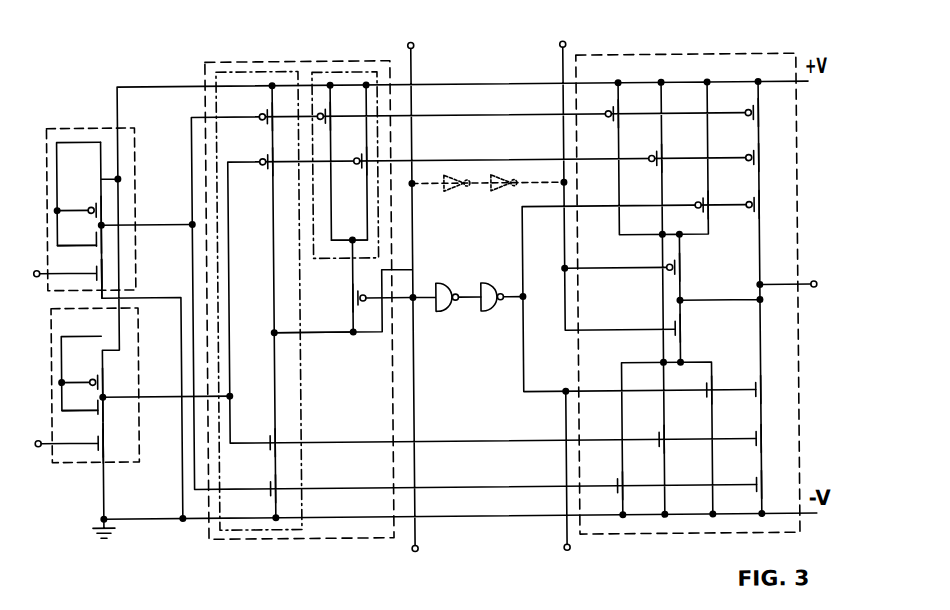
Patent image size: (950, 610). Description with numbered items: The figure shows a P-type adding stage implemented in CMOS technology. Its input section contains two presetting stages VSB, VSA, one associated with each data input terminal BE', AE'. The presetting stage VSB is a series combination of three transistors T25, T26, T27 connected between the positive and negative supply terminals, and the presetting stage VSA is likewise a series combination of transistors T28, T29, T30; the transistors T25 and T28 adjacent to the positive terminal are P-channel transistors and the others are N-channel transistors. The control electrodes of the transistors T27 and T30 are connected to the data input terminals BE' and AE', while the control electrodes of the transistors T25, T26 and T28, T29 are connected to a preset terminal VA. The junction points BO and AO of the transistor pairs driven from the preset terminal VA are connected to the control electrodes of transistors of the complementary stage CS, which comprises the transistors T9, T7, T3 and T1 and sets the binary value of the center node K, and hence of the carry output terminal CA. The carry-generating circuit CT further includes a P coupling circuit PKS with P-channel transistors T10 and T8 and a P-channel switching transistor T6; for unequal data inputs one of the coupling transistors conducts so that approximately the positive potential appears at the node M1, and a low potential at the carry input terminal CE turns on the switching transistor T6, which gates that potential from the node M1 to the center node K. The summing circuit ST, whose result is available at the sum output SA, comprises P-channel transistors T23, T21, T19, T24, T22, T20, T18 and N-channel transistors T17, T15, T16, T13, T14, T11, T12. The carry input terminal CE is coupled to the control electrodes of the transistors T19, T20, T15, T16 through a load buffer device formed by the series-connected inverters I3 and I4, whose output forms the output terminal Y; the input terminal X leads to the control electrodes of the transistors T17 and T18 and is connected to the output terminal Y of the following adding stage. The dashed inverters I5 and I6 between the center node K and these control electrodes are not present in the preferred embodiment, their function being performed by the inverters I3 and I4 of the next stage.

The transistor T1 is at (268, 496).
The transistor T3 is at (268, 445).
The switching transistor T6 is at (370, 296).
The transistor T7 is at (266, 170).
The transistor T8 is at (351, 167).
The transistor T9 is at (257, 111).
The transistor T10 is at (339, 117).
The transistor T11 is at (612, 493).
The transistor T12 is at (751, 491).
The transistor T13 is at (658, 449).
The transistor T14 is at (755, 448).
The transistor T15 is at (702, 398).
The transistor T16 is at (751, 402).
The transistor T17 is at (687, 334).
The transistor T18 is at (684, 262).
The transistor T19 is at (719, 206).
The transistor T20 is at (766, 200).
The transistor T21 is at (653, 163).
The transistor T22 is at (764, 152).
The transistor T23 is at (607, 118).
The transistor T24 is at (763, 106).
The transistor T25 is at (85, 201).
The transistor T26 is at (85, 237).
The transistor T27 is at (76, 268).
The transistor T28 is at (89, 372).
The transistor T29 is at (90, 403).
The transistor T30 is at (79, 436).
The inverter I3 is at (447, 313).
The inverter I4 is at (502, 313).
The inverter I5 is at (456, 201).
The inverter I6 is at (503, 201).
The complementary stage CS is at (232, 70).
The carry-generating circuit CT is at (317, 61).
The P coupling circuit PKS is at (357, 74).
The summing circuit ST is at (695, 69).
The presetting stage VSB is at (105, 123).
The presetting stage VSA is at (80, 457).
The preset terminal VA is at (80, 275).
The carry output terminal CA is at (414, 32).
The carry input terminal CE is at (422, 564).
The input terminal X is at (560, 31).
The output terminal Y is at (569, 563).
The sum output SA is at (818, 271).
The data input terminal BE' is at (33, 288).
The data input terminal AE' is at (34, 458).
The junction point BO is at (146, 208).
The junction point AO is at (165, 378).
The center node K is at (305, 334).
The node M1 is at (349, 228).